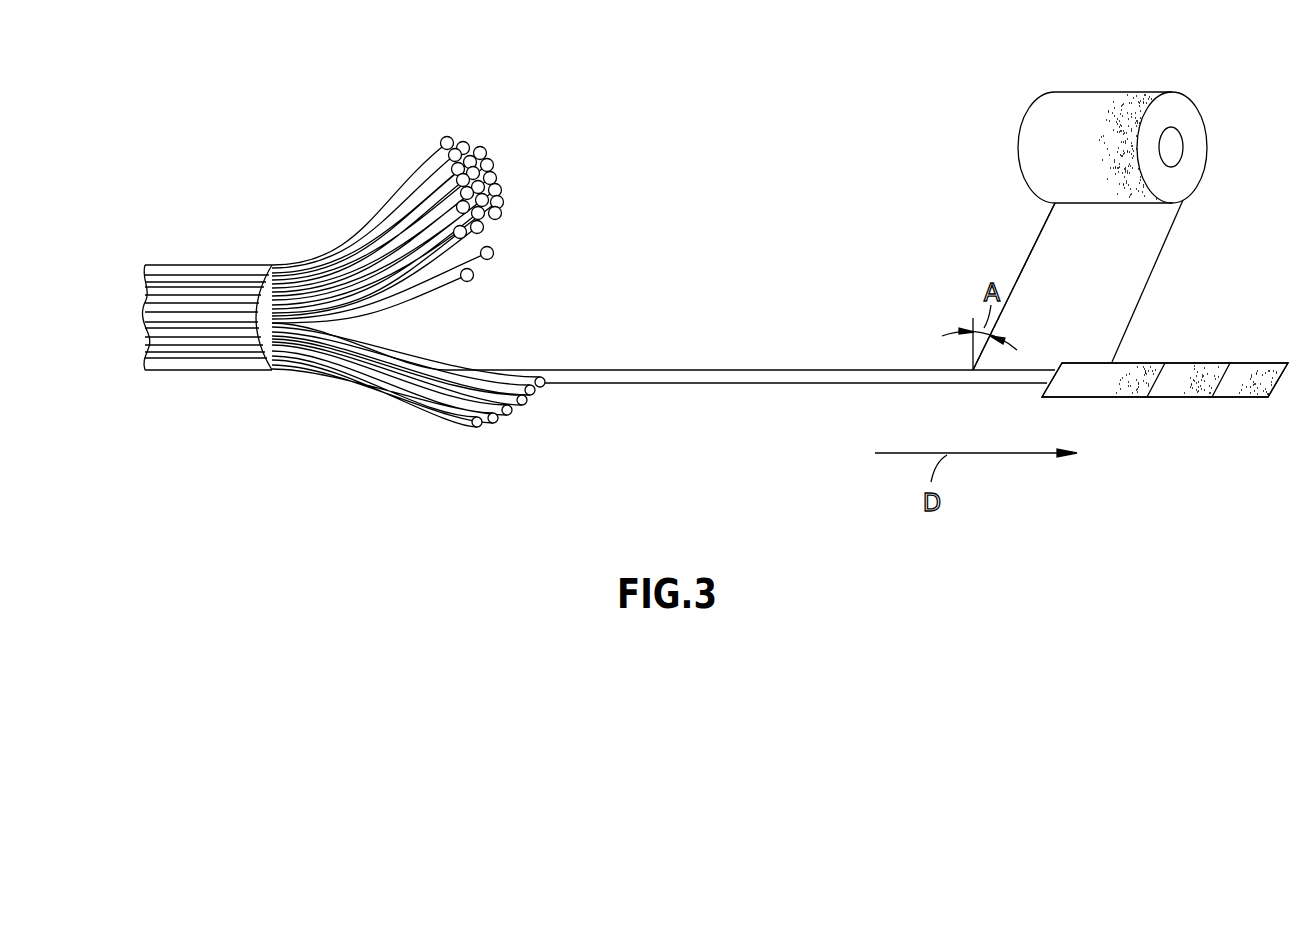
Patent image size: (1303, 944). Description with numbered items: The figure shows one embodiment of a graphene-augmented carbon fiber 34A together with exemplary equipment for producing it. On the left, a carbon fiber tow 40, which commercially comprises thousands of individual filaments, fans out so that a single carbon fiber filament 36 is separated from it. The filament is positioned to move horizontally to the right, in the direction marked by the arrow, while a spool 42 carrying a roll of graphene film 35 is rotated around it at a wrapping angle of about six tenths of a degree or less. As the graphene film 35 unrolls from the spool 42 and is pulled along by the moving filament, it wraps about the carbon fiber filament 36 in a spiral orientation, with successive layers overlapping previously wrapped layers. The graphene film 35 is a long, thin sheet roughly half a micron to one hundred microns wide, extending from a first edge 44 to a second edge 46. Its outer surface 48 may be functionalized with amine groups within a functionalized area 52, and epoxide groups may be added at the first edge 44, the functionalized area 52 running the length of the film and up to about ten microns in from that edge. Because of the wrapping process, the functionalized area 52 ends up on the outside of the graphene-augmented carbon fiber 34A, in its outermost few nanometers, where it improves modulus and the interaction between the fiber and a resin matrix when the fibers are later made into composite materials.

The graphene-augmented carbon fiber 34A is at (1160, 326).
The graphene film 35 is at (1055, 250).
The carbon fiber filament 36 is at (430, 206).
The carbon fiber tow 40 is at (228, 265).
The spool 42 is at (1172, 147).
The first edge 44 is at (1176, 220).
The second edge 46 is at (1018, 277).
The outer surface 48 is at (1045, 110).
The functionalized area 52 is at (1135, 108).